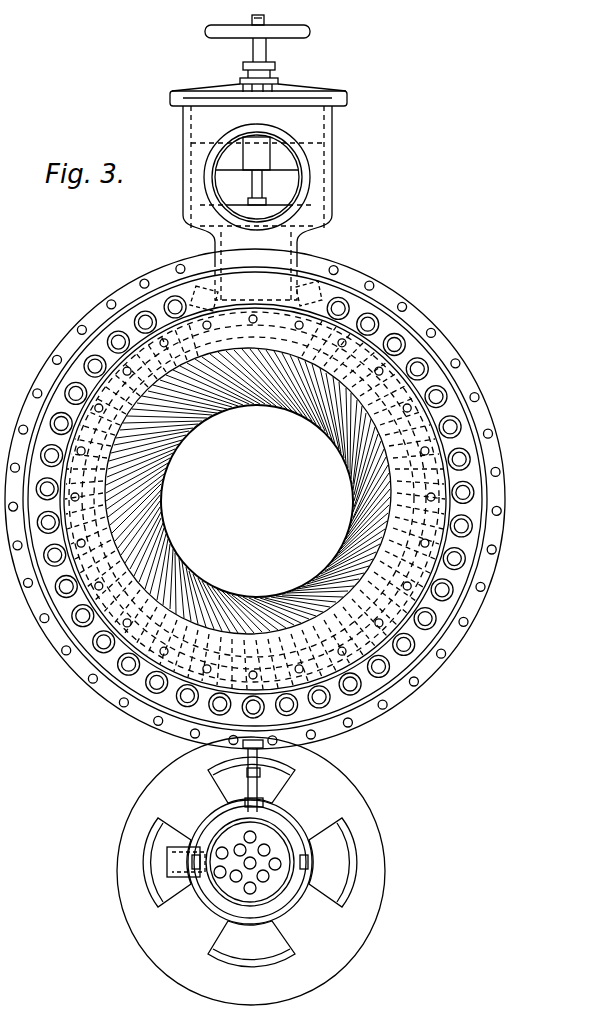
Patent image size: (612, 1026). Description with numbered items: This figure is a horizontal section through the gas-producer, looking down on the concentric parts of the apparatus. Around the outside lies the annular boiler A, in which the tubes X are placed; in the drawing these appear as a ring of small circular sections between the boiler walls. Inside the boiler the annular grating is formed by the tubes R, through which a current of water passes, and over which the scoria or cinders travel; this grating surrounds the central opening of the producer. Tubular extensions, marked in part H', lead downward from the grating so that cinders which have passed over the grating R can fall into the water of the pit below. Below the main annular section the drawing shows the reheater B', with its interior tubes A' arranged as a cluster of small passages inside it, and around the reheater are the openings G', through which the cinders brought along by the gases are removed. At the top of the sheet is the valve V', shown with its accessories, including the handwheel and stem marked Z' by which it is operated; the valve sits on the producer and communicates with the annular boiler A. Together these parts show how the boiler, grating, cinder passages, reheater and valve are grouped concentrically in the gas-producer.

The handwheel Z' is at (258, 49).
The valve V' is at (253, 192).
The interior tubes A' is at (256, 509).
The reheater B' is at (253, 864).
The annular boiler A is at (255, 530).
The tubes X is at (328, 398).
The dashed partition region H' is at (255, 500).
The openings G' is at (253, 660).
The annular grating tubes R is at (232, 580).